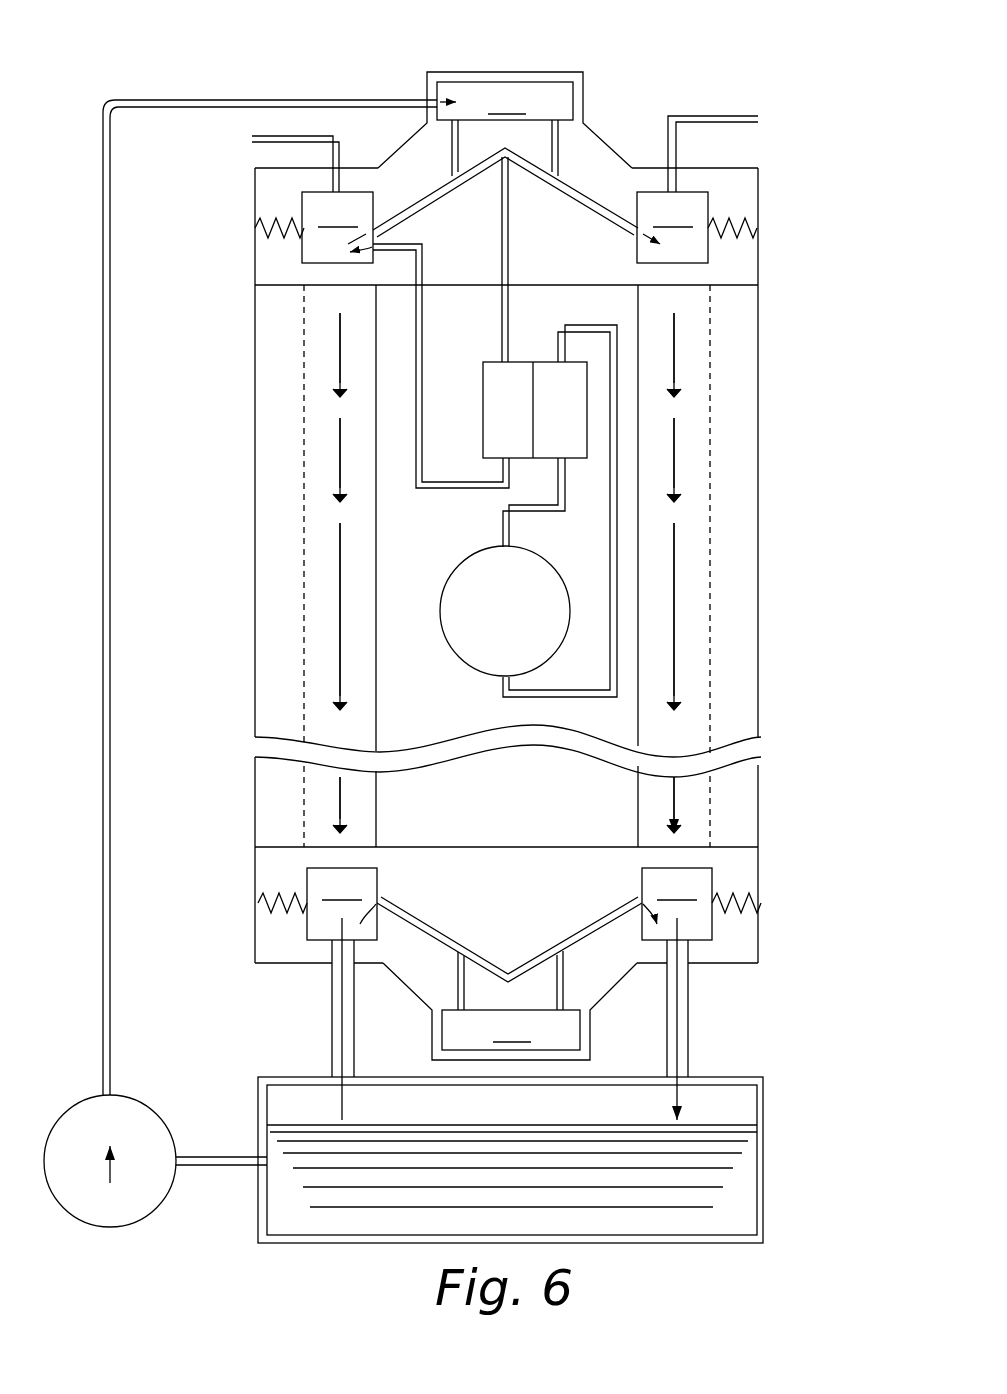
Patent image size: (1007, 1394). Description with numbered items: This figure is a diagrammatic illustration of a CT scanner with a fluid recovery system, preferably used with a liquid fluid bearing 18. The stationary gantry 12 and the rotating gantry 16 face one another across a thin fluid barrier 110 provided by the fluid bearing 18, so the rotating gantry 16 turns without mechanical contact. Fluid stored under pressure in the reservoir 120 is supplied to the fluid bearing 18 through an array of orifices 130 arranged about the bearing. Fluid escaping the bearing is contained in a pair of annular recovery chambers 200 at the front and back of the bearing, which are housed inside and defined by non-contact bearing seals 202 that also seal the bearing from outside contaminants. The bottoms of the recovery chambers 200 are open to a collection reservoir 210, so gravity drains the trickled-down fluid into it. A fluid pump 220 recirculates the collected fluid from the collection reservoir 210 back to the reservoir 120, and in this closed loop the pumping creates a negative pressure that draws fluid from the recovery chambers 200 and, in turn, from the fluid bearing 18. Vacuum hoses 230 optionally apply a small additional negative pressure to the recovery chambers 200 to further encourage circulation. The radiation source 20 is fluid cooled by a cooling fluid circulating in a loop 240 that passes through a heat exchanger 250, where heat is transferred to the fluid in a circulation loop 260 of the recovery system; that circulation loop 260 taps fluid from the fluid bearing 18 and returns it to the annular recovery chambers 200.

The stationary gantry 12 is at (572, 168).
The rotating gantry 16 is at (576, 261).
The fluid bearing 18 is at (420, 185).
The radiation source 20 is at (455, 567).
The fluid barrier 110 is at (602, 200).
The reservoir 120 is at (508, 566).
The orifices 130 is at (462, 117).
The annular recovery chambers 200 is at (507, 566).
The non-contact bearing seals 202 is at (283, 240).
The collection reservoir 210 is at (531, 1117).
The fluid pump 220 is at (157, 1112).
The vacuum hoses 230 is at (292, 133).
The loop 240 is at (585, 488).
The heat exchanger 250 is at (532, 355).
The circulation loop 260 is at (500, 298).